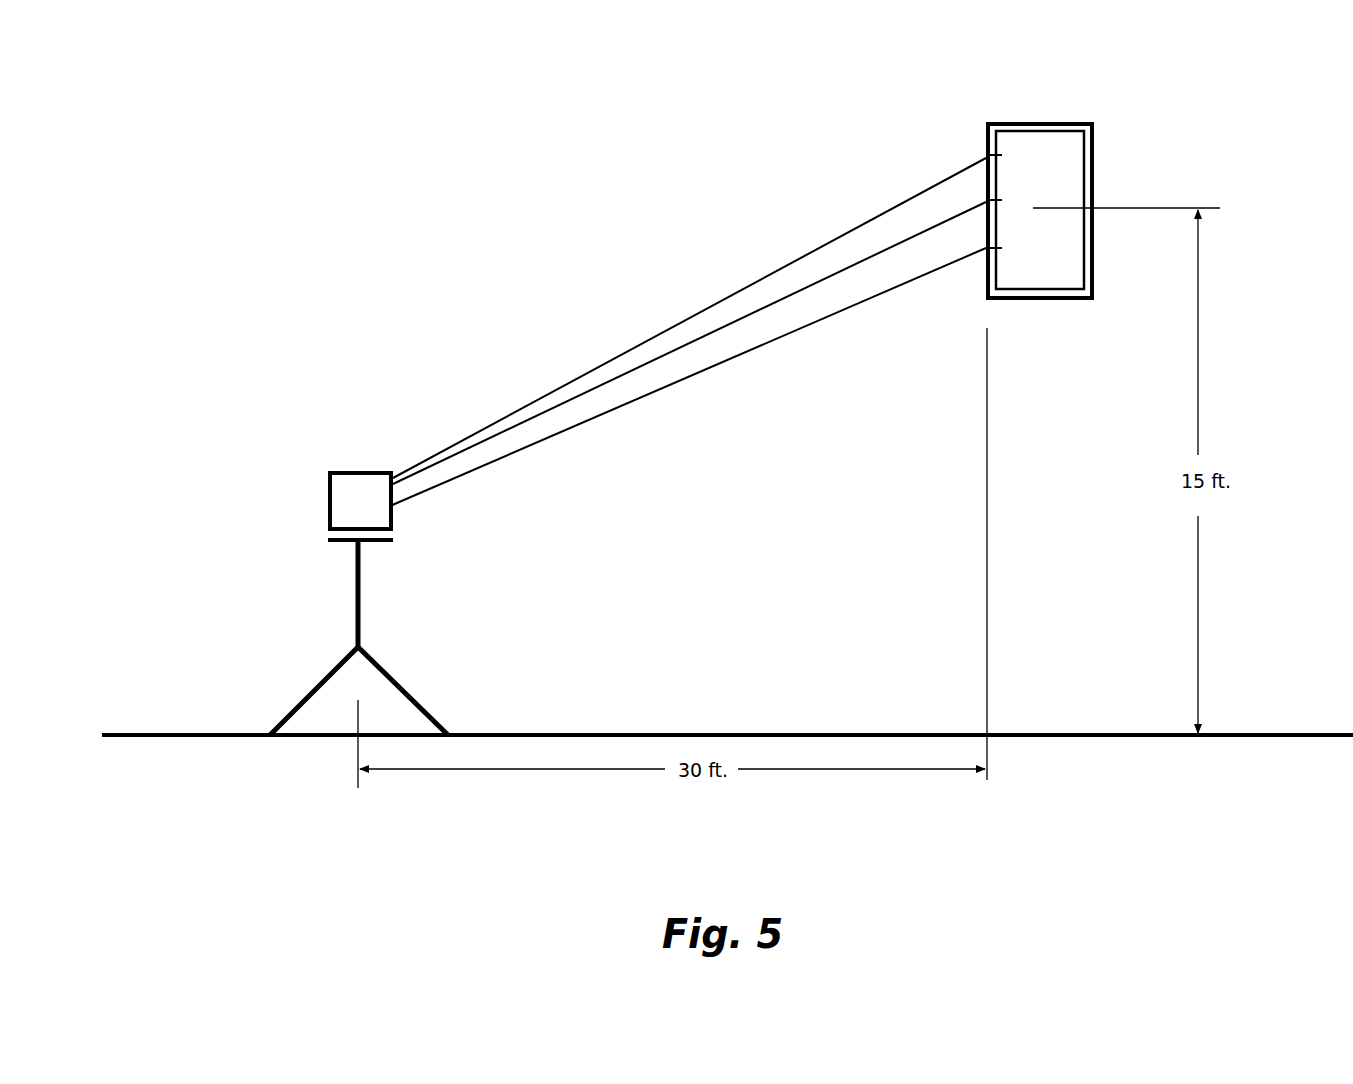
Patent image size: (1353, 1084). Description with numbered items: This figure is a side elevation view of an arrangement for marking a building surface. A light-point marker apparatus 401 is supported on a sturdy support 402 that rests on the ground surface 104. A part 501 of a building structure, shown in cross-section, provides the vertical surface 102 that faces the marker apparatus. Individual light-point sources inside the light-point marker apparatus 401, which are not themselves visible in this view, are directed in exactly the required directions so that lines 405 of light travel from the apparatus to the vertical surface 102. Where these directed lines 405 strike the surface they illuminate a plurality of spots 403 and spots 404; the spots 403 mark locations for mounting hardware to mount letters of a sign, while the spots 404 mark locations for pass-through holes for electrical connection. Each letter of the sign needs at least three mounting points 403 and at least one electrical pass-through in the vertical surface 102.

The vertical surface 102 is at (985, 137).
The ground surface 104 is at (158, 733).
The light-point marker apparatus 401 is at (326, 508).
The sturdy support 402 is at (353, 617).
The spots 403 is at (1002, 155).
The spots 404 is at (987, 205).
The lines 405 is at (663, 328).
The part 501 is at (1040, 120).